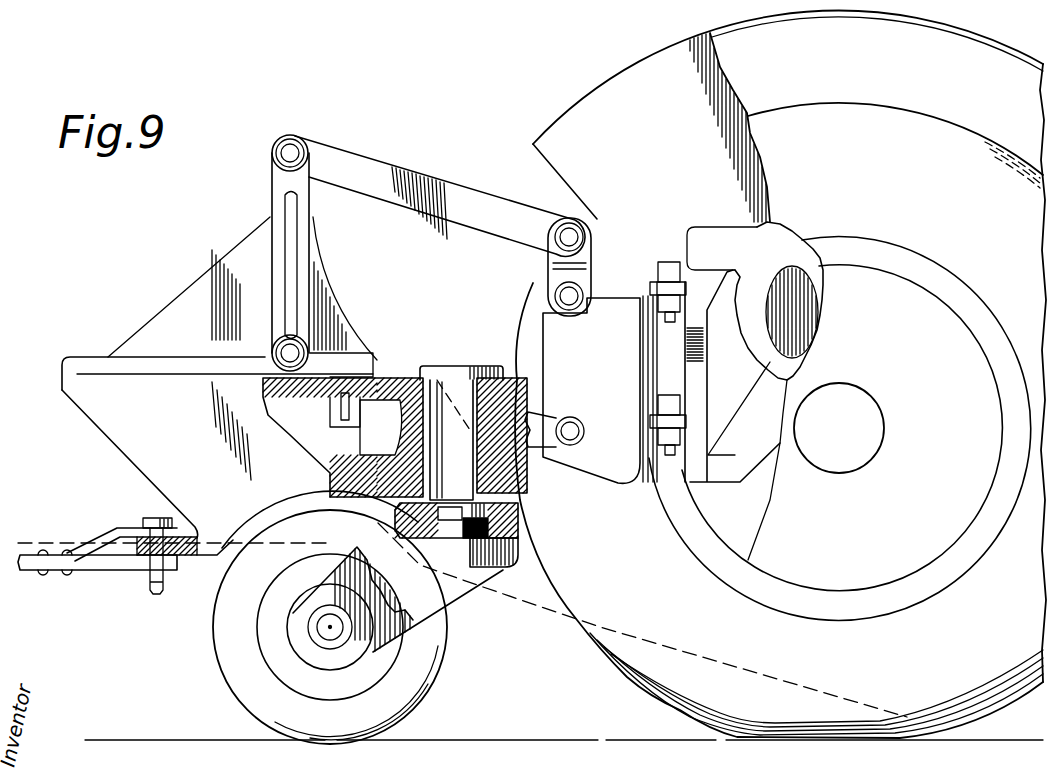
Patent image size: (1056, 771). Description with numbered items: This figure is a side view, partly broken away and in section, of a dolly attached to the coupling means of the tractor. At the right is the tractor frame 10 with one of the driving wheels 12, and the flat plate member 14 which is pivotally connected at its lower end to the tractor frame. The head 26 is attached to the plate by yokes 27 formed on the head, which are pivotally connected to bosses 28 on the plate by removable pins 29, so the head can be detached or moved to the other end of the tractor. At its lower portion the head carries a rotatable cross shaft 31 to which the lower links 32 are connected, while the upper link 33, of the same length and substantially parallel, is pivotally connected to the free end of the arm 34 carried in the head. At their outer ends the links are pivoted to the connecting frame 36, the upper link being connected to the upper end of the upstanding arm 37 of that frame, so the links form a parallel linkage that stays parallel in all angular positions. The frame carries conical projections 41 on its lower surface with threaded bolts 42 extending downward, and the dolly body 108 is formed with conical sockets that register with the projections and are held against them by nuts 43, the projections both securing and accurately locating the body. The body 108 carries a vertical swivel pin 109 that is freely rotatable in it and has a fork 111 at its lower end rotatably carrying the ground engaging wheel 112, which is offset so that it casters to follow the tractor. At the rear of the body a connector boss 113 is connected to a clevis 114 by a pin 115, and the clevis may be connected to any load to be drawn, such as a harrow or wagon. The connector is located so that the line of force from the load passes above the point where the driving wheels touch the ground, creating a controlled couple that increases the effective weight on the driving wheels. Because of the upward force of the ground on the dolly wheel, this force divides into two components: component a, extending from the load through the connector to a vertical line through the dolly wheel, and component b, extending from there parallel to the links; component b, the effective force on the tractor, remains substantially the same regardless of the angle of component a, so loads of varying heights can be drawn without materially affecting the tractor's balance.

The frame 10 is at (1002, 58).
The driving wheels 12 is at (616, 652).
The flat plate member 14 is at (704, 352).
The head 26 is at (560, 351).
The yokes 27 is at (648, 285).
The bosses 28 is at (656, 302).
The removable pins 29 is at (668, 262).
The cross shaft 31 is at (570, 446).
The lower links 32 is at (560, 420).
The upper link 33 is at (495, 203).
The arm 34 is at (547, 277).
The frame 36 is at (150, 318).
The upstanding arm 37 is at (278, 240).
The conical projections 41 is at (353, 374).
The threaded bolts 42 is at (332, 406).
The nuts 43 is at (352, 440).
The frame or body 108 is at (130, 448).
The vertical swivel pin 109 is at (477, 378).
The fork 111 is at (485, 585).
The ground engaging wheel 112 is at (432, 671).
The connector boss 113 is at (183, 560).
The clevis 114 is at (90, 572).
The pin 115 is at (152, 516).
The force component a is at (213, 540).
The force component b is at (536, 610).